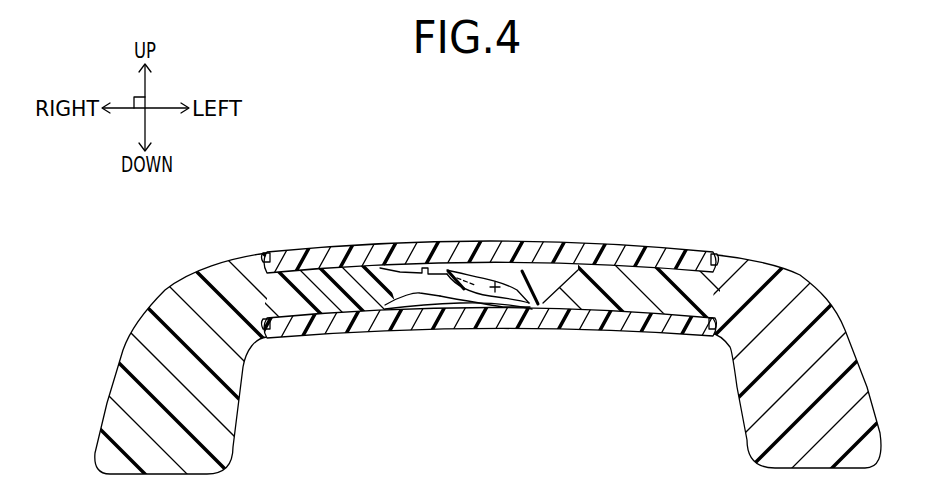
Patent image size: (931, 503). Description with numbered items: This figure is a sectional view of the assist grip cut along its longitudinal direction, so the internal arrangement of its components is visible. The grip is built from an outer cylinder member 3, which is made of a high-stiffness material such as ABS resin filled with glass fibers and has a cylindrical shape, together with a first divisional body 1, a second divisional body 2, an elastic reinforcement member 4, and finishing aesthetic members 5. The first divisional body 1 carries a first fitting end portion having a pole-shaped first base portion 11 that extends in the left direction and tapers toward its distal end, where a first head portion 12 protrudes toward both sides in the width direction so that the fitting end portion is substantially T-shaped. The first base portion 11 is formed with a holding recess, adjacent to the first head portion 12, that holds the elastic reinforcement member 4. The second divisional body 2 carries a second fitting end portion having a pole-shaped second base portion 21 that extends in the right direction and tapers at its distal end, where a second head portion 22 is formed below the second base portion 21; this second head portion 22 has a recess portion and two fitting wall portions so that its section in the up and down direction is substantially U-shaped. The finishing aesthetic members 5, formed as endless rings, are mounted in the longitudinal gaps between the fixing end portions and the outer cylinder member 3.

The first divisional body 1 is at (215, 273).
The second divisional body 2 is at (772, 270).
The outer cylinder member 3 is at (553, 243).
The elastic reinforcement member 4 is at (537, 308).
The finishing aesthetic member 5 is at (264, 253).
The first base portion 11 is at (437, 285).
The first head portion 12 is at (493, 284).
The second base portion 21 is at (508, 272).
The second head portion 22 is at (483, 283).